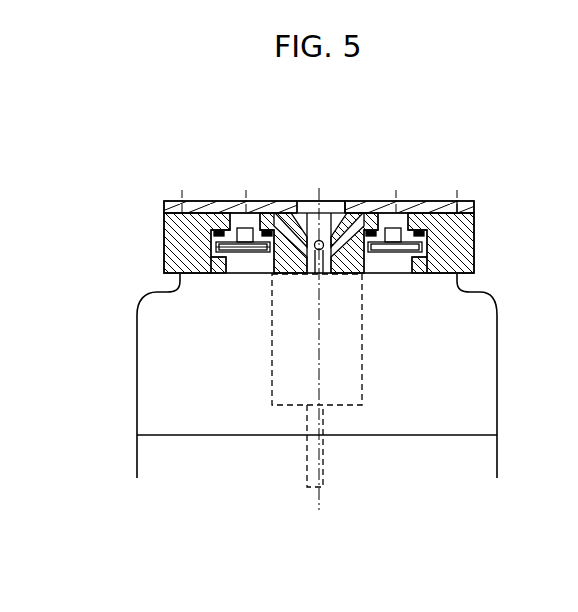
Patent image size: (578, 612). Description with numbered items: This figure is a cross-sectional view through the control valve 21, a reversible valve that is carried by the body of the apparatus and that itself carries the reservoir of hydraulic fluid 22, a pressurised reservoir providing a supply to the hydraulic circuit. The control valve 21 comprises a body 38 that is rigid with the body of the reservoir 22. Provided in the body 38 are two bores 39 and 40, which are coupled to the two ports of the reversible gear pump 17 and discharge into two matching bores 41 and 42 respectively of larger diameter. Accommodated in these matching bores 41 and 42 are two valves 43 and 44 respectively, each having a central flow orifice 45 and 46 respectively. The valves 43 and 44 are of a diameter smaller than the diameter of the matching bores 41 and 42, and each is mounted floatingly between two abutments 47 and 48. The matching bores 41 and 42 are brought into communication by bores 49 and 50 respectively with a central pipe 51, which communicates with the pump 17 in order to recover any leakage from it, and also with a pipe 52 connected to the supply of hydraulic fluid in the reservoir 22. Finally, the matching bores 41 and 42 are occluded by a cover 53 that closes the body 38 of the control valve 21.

The gear pump 17 is at (415, 404).
The control valve 21 is at (480, 224).
The reservoir of hydraulic fluid 22 is at (292, 380).
The body 38 is at (185, 235).
The bore 39 is at (238, 275).
The bore 40 is at (390, 275).
The matching bore 41 is at (218, 222).
The matching bore 42 is at (420, 220).
The valve 43 is at (248, 243).
The valve 44 is at (384, 240).
The central flow orifice 45 is at (236, 226).
The central flow orifice 46 is at (402, 225).
The abutment 47 is at (222, 234).
The abutment 48 is at (218, 274).
The bore 49 is at (296, 213).
The bore 50 is at (345, 213).
The central pipe 51 is at (324, 275).
The pipe 52 is at (315, 275).
The cover 53 is at (452, 213).